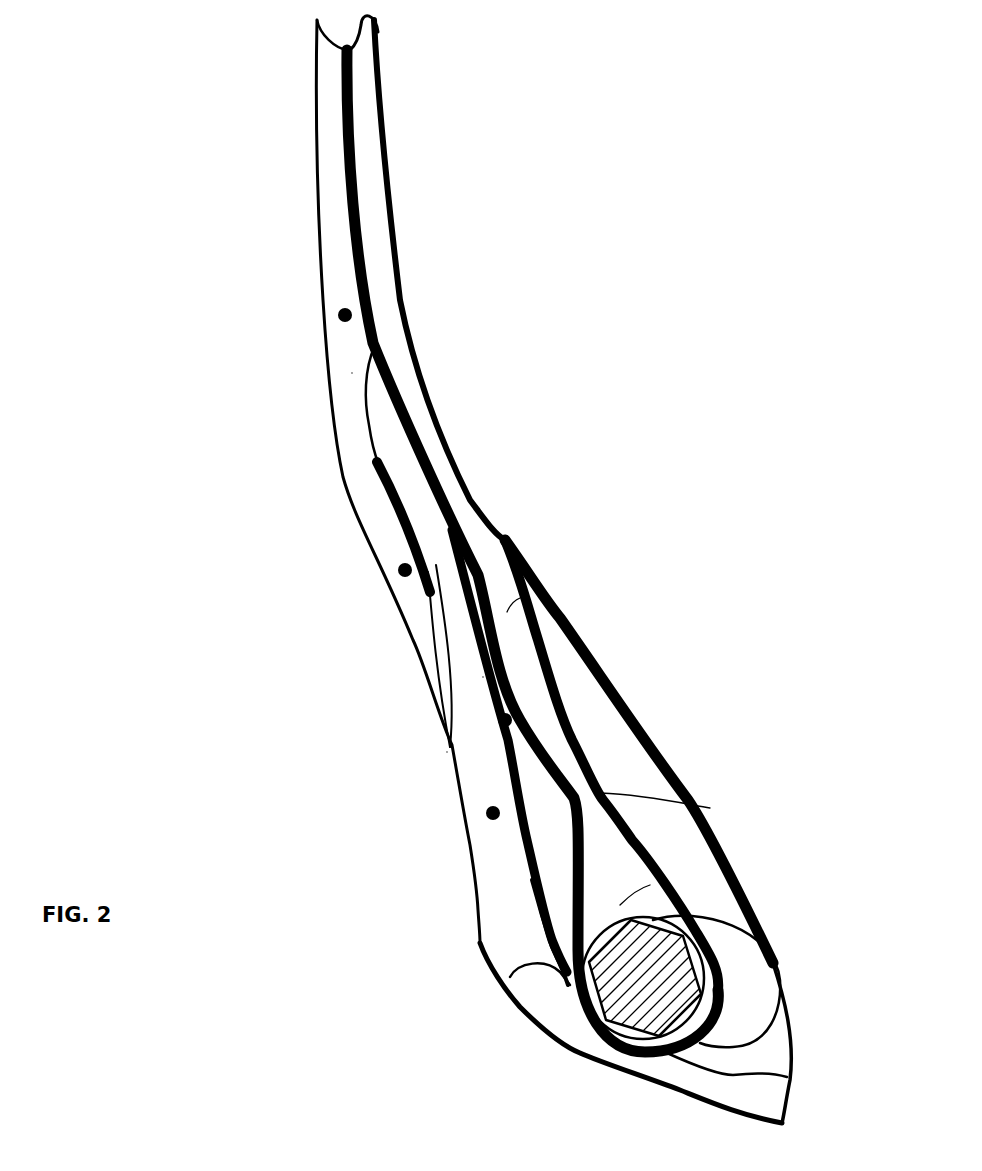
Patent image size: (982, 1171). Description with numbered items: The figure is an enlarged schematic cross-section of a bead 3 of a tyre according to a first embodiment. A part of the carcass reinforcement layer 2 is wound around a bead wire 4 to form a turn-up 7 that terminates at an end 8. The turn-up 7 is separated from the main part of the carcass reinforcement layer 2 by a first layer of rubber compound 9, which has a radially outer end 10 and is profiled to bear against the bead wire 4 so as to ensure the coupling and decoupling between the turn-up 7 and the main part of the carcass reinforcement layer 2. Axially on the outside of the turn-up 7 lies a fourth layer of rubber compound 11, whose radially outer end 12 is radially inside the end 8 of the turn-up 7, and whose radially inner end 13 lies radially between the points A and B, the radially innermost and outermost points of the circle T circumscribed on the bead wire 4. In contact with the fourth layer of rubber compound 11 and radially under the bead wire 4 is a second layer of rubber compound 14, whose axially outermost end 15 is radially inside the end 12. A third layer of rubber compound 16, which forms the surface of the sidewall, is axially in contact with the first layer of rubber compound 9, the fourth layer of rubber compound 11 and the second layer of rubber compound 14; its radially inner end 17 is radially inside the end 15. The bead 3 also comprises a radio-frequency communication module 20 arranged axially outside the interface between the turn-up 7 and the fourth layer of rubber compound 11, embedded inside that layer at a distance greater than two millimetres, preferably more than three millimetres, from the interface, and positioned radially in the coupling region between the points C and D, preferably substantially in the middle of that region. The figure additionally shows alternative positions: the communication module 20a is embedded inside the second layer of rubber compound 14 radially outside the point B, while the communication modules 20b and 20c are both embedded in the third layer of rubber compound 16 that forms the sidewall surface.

The carcass reinforcement layer 2 is at (362, 248).
The bead 3 is at (720, 720).
The bead wire 4 is at (643, 993).
The turn-up 7 is at (565, 848).
The end of the turn-up 8 is at (377, 462).
The first layer of rubber compound 9 is at (637, 893).
The radially outer end of the first layer of rubber compound 10 is at (375, 355).
The fourth layer of rubber compound 11 is at (483, 677).
The radially outer end of the fourth layer of rubber compound 12 is at (412, 568).
The radially inner end of the fourth layer of rubber compound 13 is at (520, 965).
The second layer of rubber compound 14 is at (493, 920).
The axially outermost end of the second layer of rubber compound 15 is at (440, 658).
The third layer of rubber compound 16 is at (352, 373).
The radially inner end of the third layer of rubber compound 17 is at (447, 752).
The radio-frequency communication module 20 is at (505, 720).
The communication module 20a is at (493, 813).
The communication module 20b is at (433, 553).
The communication module 20c is at (345, 315).
The radially innermost point of the circumscribed circle A is at (787, 1077).
The radially outermost point of the circumscribed circle B is at (662, 913).
The point of the coupling region C is at (600, 793).
The point of the coupling region D is at (507, 612).
The circle circumscribed on the bead wire T is at (713, 967).